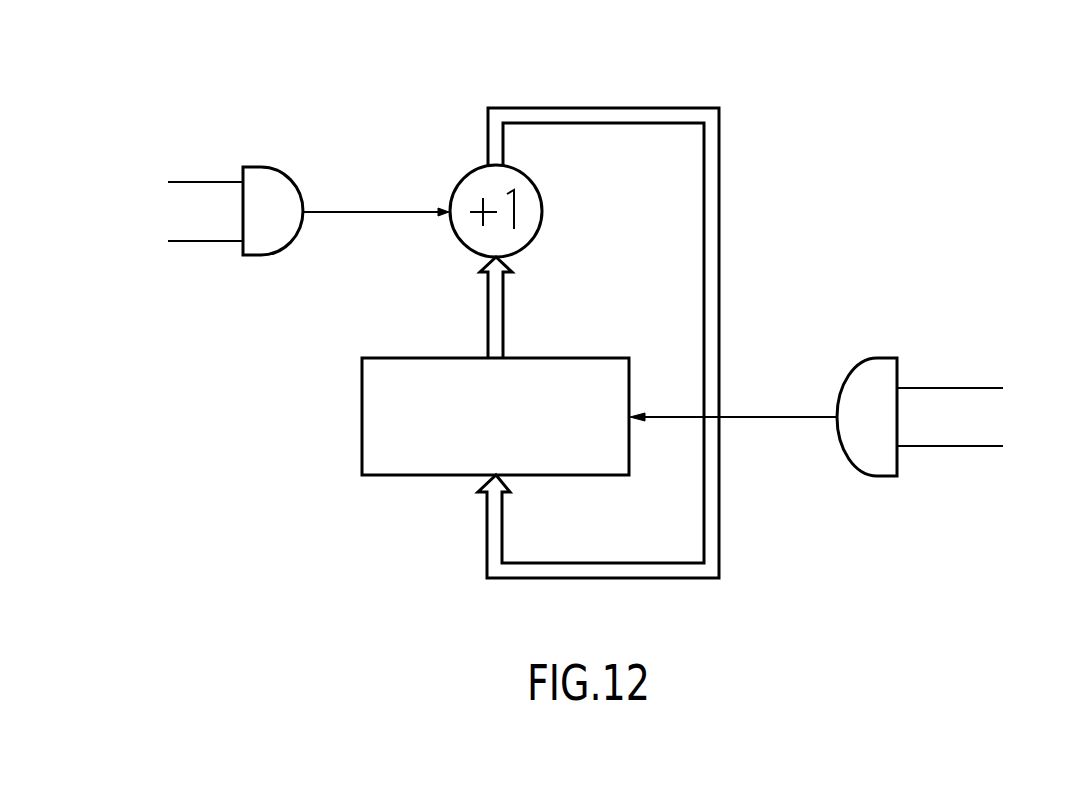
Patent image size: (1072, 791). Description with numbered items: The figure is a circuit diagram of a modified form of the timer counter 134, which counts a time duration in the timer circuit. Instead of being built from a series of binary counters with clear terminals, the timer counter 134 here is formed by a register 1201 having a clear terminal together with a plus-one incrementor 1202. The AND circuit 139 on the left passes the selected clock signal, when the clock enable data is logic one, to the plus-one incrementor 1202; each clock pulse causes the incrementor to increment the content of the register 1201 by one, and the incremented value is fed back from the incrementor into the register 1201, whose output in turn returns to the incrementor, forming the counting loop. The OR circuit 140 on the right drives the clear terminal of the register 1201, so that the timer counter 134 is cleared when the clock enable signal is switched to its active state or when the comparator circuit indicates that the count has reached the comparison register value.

The timer counter 134 is at (776, 101).
The AND circuit 139 is at (262, 167).
The OR circuit 140 is at (877, 358).
The register 1201 is at (582, 358).
The +1 incrementor 1202 is at (543, 212).